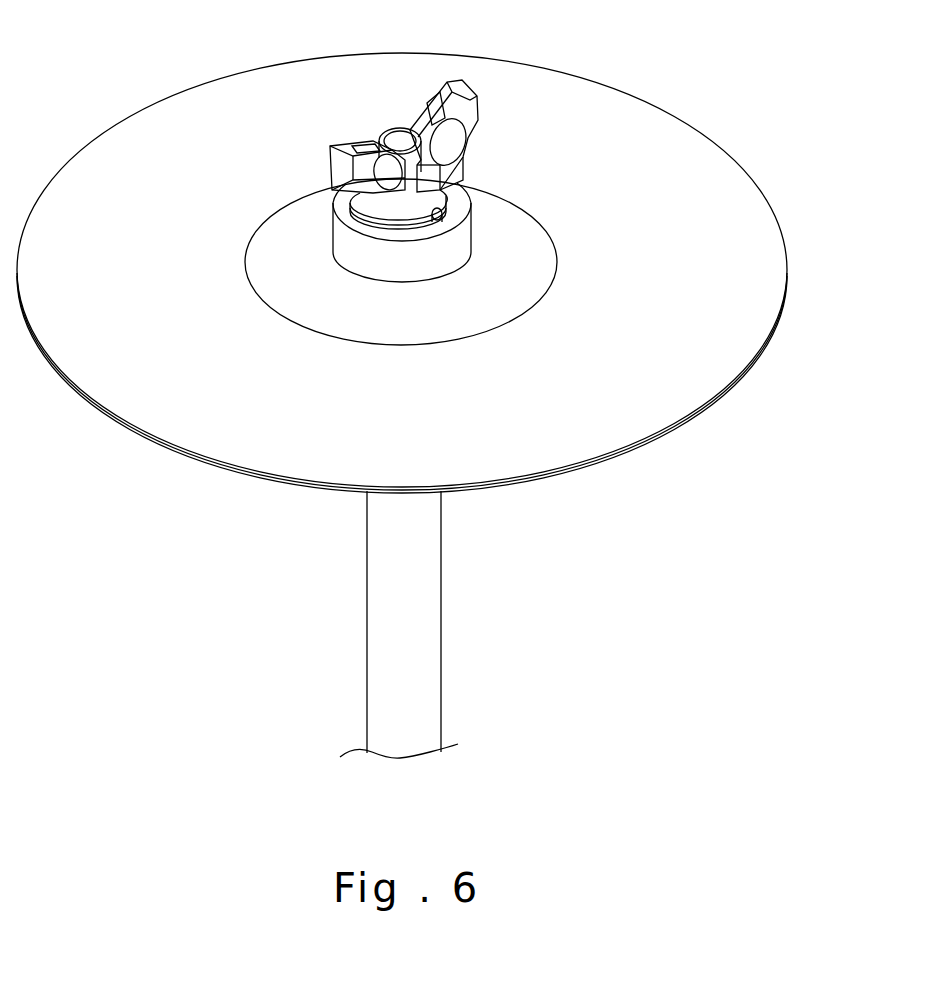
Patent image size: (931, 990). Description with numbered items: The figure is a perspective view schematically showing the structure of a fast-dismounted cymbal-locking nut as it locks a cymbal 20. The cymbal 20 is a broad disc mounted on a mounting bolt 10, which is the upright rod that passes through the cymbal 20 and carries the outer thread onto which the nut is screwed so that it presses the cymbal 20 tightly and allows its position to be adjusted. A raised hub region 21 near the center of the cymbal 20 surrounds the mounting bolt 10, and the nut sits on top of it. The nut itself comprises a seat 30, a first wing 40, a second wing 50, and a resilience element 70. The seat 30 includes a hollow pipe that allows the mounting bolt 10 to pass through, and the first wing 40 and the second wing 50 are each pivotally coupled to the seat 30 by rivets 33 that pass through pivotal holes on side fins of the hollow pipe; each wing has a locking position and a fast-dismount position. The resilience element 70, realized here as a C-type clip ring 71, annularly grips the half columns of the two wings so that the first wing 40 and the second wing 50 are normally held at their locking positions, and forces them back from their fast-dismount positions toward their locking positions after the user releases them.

The mounting bolt 10 is at (408, 619).
The cymbal 20 is at (703, 175).
The hub 21 is at (438, 253).
The seat 30 is at (393, 117).
The rivet 33 is at (392, 172).
The first wing 40 is at (321, 165).
The second wing 50 is at (480, 108).
The resilience element 70 is at (506, 222).
The C-type clip ring 71 is at (435, 216).